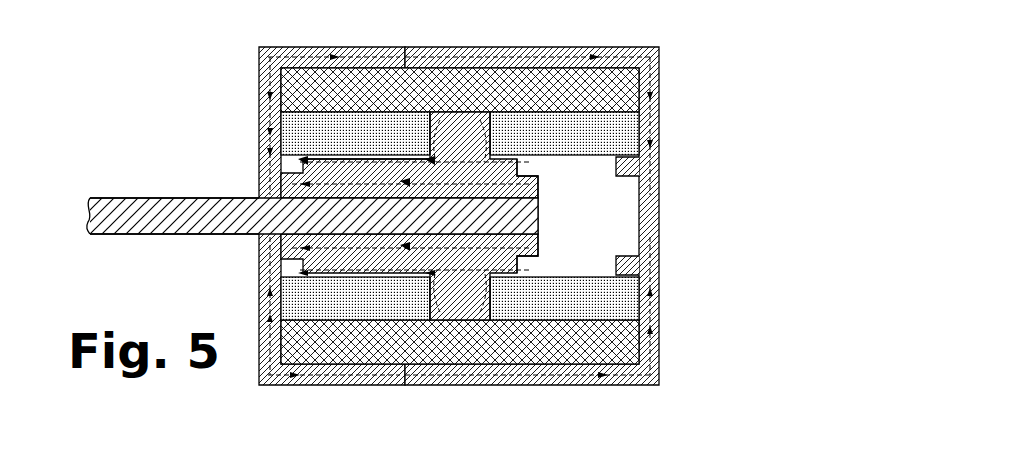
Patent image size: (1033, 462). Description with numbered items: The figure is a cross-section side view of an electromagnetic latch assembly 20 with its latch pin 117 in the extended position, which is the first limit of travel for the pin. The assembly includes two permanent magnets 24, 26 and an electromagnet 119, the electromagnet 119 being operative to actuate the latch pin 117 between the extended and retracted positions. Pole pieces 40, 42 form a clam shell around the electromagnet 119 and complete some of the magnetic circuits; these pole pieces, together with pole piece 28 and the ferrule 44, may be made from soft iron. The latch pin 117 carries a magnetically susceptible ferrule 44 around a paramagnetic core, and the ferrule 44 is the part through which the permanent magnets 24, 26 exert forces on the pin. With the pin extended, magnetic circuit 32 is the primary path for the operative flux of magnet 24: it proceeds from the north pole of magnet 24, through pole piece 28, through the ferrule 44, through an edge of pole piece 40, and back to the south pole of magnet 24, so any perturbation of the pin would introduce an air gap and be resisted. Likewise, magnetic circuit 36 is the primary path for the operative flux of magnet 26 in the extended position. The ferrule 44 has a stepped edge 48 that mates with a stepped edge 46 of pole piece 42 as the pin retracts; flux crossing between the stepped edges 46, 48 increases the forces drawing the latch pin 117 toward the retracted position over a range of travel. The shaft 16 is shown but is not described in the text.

The electromagnetic latch assembly 20 is at (118, 70).
The shaft 16 is at (244, 204).
The latch pin 117 is at (117, 220).
The pole piece 40 is at (270, 55).
The pole piece 42 is at (658, 56).
The ferrule 44 is at (487, 180).
The stepped edge 46 is at (625, 170).
The stepped edge 48 is at (528, 183).
The electromagnet 119 is at (605, 90).
The permanent magnet 26 is at (578, 303).
The permanent magnet 24 is at (358, 303).
The pole piece 28 is at (457, 307).
The magnetic circuit 32 is at (360, 160).
The magnetic circuit 36 is at (378, 182).